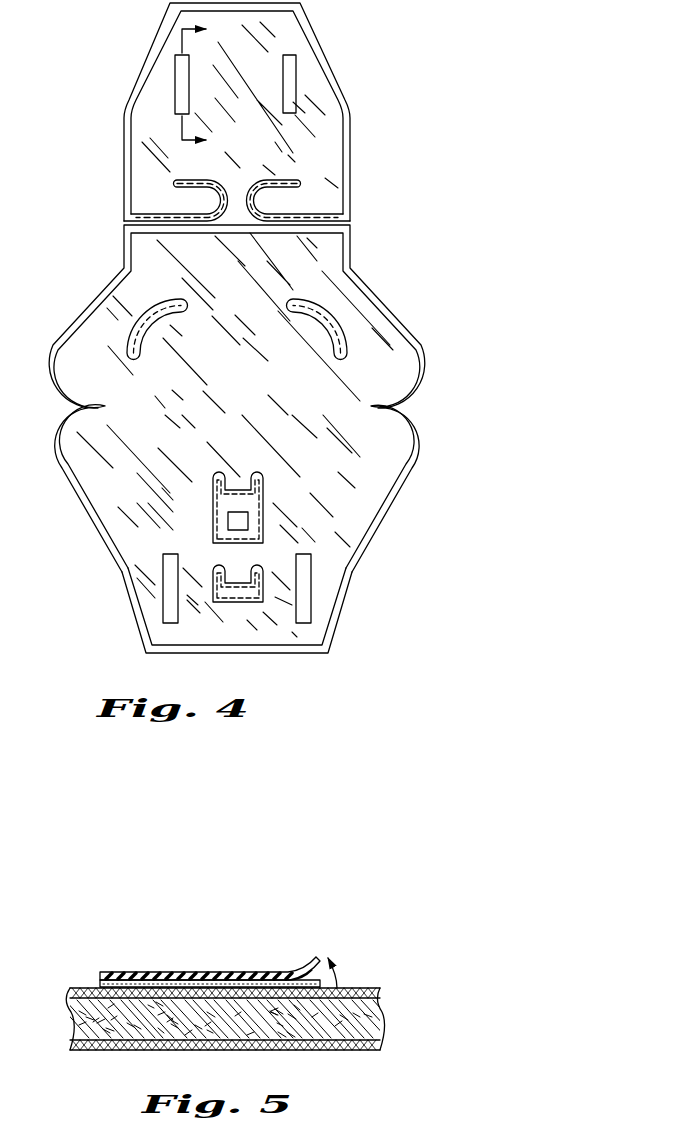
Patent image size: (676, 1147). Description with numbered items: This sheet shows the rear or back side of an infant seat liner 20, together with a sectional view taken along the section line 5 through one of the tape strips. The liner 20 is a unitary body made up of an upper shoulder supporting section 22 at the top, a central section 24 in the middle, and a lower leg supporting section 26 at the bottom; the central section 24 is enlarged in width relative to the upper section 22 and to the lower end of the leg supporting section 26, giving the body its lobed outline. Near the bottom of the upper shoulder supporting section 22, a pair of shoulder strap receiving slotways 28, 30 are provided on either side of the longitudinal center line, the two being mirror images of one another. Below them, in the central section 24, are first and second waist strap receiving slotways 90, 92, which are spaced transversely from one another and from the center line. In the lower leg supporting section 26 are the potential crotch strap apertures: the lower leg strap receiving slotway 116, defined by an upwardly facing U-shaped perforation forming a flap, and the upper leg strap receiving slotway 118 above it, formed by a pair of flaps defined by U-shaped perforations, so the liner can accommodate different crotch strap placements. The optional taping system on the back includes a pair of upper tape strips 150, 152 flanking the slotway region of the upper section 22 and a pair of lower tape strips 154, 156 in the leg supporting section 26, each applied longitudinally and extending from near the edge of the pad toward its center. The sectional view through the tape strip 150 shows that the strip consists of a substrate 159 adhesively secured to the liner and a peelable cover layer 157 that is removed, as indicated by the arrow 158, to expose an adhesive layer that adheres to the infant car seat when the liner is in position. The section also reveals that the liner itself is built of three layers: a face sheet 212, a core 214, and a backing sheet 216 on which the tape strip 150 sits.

In FIG. 4, the infant seat liner 20 is at (273, 354).
In FIG. 4, the upper shoulder supporting section 22 is at (327, 177).
In FIG. 4, the central section 24 is at (388, 466).
In FIG. 4, the lower leg supporting section 26 is at (322, 621).
In FIG. 4, the shoulder strap receiving slotway 28 is at (307, 207).
In FIG. 4, the shoulder strap receiving slotway 30 is at (180, 205).
In FIG. 4, the waist strap receiving slotway 90 is at (332, 325).
In FIG. 4, the waist strap receiving slotway 92 is at (140, 326).
In FIG. 4, the lower leg strap receiving slotway 116 is at (267, 562).
In FIG. 4, the upper leg strap receiving slotway 118 is at (266, 493).
In FIG. 4, the upper tape strip 150 is at (187, 101).
In FIG. 5, the upper tape strip 150 is at (210, 938).
In FIG. 4, the upper tape strip 152 is at (293, 82).
In FIG. 4, the lower tape strip 154 is at (167, 613).
In FIG. 4, the lower tape strip 156 is at (298, 613).
In FIG. 5, the peelable cover layer 157 is at (253, 977).
In FIG. 5, the arrow 158 is at (343, 977).
In FIG. 5, the substrate 159 is at (142, 982).
In FIG. 5, the face sheet 212 is at (350, 1050).
In FIG. 5, the core 214 is at (372, 1012).
In FIG. 5, the backing sheet 216 is at (372, 988).
In FIG. 4, the section line 5 is at (203, 89).